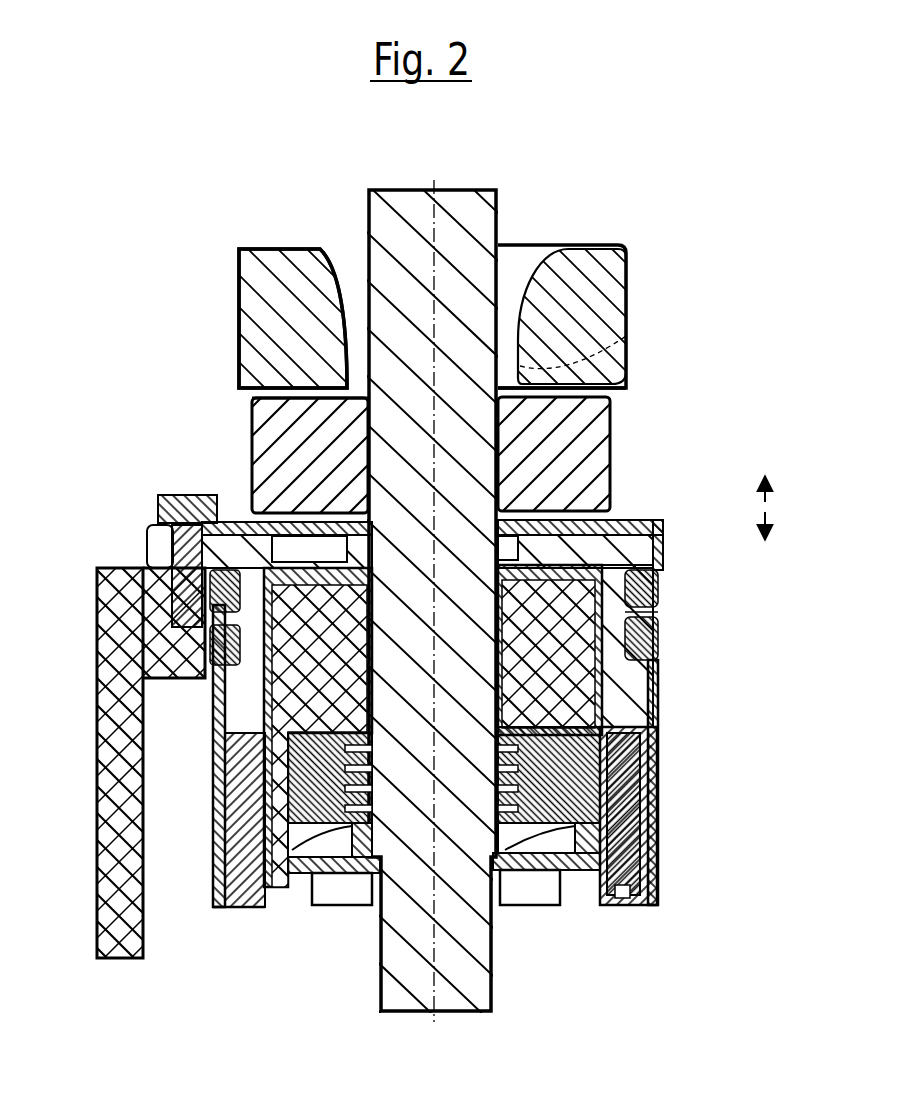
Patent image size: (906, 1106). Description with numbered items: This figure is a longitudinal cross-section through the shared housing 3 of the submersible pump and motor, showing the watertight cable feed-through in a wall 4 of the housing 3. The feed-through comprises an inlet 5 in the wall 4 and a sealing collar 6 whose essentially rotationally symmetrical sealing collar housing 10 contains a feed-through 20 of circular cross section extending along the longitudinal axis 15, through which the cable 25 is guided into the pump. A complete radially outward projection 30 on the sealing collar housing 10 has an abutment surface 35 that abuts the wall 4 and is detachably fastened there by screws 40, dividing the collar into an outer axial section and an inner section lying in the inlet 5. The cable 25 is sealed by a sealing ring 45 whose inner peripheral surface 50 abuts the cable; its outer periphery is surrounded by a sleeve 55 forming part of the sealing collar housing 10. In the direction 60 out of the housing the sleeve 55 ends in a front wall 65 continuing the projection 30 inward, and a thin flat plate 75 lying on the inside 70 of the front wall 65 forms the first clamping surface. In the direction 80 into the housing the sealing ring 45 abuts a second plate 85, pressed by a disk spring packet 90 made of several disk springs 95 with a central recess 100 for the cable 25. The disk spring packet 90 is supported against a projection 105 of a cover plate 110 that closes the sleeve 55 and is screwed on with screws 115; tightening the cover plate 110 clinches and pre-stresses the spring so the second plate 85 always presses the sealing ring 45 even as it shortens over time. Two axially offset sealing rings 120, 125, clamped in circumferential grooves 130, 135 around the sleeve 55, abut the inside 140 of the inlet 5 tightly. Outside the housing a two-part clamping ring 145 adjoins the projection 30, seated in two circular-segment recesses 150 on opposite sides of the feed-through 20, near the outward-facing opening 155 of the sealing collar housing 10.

The housing 3 is at (110, 790).
The wall 4 is at (140, 665).
The inlet 5 is at (207, 690).
The sealing collar 6 is at (218, 358).
The sealing collar housing 10 is at (622, 305).
The longitudinal axis 15 is at (436, 188).
The feed-through 20 is at (560, 375).
The cable 25 is at (500, 245).
The projection 30 is at (165, 550).
The abutment surface 35 is at (150, 552).
The screws 40 is at (165, 495).
The sealing ring 45 is at (570, 700).
The inner peripheral surface 50 is at (600, 740).
The sleeve 55 is at (656, 800).
The direction outside the housing 60 is at (790, 486).
The front wall 65 is at (265, 440).
The inside of the front wall 70 is at (620, 535).
The plate 75 is at (225, 522).
The direction into the housing 80 is at (790, 531).
The second plate 85 is at (656, 860).
The disk spring packet 90 is at (600, 875).
The disk springs 95 is at (560, 860).
The central recess 100 is at (355, 885).
The projection 105 is at (290, 905).
The cover plate 110 is at (225, 860).
The screws 115 is at (215, 907).
The sealing ring 120 is at (656, 590).
The sealing ring 125 is at (656, 650).
The groove 130 is at (656, 612).
The groove 135 is at (656, 680).
The inside of the inlet 140 is at (150, 665).
The clamping ring 145 is at (285, 512).
The recesses 150 is at (605, 390).
The opening 155 is at (335, 272).